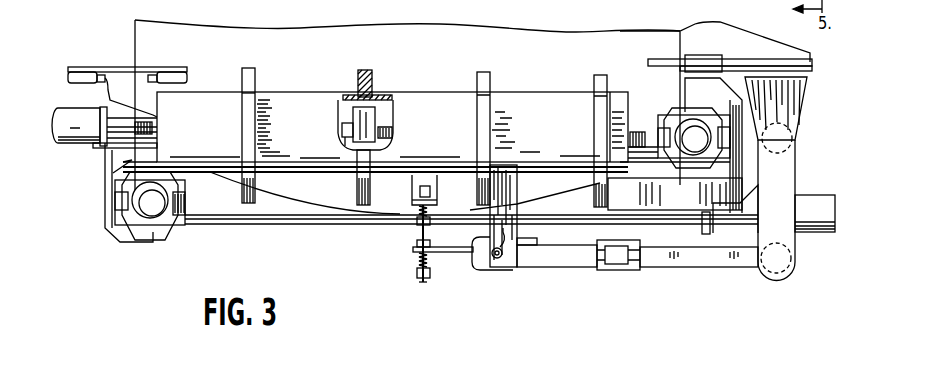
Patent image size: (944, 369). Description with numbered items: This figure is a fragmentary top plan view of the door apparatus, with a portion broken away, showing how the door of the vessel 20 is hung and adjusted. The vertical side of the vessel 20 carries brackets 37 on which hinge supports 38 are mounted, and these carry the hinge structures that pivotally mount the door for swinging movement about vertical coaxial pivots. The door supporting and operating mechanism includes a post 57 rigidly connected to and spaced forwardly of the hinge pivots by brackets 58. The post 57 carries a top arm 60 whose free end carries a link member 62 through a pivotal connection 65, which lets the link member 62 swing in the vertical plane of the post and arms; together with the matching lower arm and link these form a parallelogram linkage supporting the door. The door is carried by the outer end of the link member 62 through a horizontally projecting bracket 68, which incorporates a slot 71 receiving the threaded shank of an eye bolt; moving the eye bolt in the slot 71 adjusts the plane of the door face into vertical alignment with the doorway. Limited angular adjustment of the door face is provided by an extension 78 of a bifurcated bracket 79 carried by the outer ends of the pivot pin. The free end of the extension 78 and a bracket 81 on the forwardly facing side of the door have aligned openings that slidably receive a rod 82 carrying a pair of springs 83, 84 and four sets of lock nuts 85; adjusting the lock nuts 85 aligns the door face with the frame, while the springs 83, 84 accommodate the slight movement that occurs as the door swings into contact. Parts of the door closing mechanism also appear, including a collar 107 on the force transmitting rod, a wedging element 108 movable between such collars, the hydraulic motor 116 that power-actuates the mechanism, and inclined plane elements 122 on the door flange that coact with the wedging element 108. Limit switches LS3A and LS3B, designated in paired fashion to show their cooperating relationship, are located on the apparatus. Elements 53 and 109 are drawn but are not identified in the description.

The vessel 20 is at (563, 48).
The brackets 37 is at (740, 45).
The hinge supports 38 is at (788, 109).
The support post 53 is at (250, 130).
The post 57 is at (778, 262).
The brackets 58 is at (789, 190).
The top arm 60 is at (697, 258).
The link member 62 is at (553, 258).
The pivotal connection 65 is at (615, 270).
The bracket 68 is at (511, 195).
The slot 71 is at (501, 232).
The extension 78 is at (450, 254).
The bifurcated bracket 79 is at (484, 272).
The bracket 81 is at (425, 178).
The rod 82 is at (417, 236).
The spring 83 is at (420, 210).
The spring 84 is at (429, 276).
The lock nuts 85 is at (432, 188).
The collar 107 is at (338, 112).
The wedging element 108 is at (375, 117).
The spring 109 is at (392, 129).
The hydraulic motor 116 is at (150, 208).
The inclined plane elements 122 is at (371, 103).
The limit switch LS3A is at (80, 68).
The limit switch LS3B is at (168, 77).